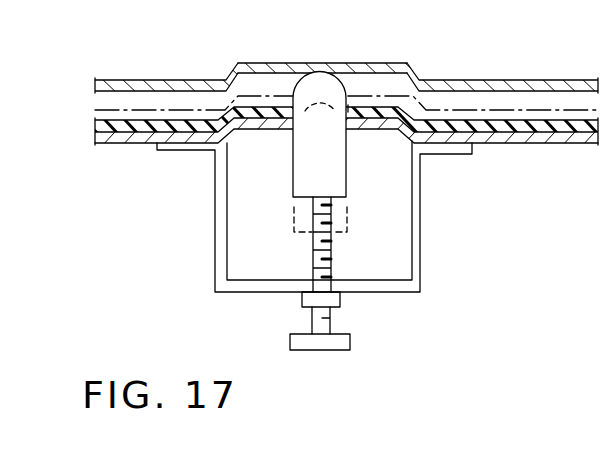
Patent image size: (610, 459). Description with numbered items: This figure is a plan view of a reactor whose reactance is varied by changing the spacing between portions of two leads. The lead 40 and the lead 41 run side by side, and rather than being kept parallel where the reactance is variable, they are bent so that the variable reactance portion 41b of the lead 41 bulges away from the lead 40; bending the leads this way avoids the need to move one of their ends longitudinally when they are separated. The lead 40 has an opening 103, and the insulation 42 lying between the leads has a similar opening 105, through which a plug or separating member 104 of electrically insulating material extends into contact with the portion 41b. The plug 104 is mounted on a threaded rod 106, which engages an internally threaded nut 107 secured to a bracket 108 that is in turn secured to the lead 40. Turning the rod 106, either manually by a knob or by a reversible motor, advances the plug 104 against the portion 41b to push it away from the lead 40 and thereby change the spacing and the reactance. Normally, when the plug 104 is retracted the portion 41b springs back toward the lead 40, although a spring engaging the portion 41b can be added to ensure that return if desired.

The lead 41 is at (165, 80).
The variable reactance portion 41b is at (383, 63).
The insulation 42 is at (97, 127).
The lead 40 is at (114, 146).
The opening 103 is at (286, 128).
The plug or separating member 104 is at (340, 173).
The opening 105 is at (353, 112).
The threaded rod 106 is at (325, 255).
The internally threaded nut 107 is at (337, 301).
The bracket 108 is at (322, 344).